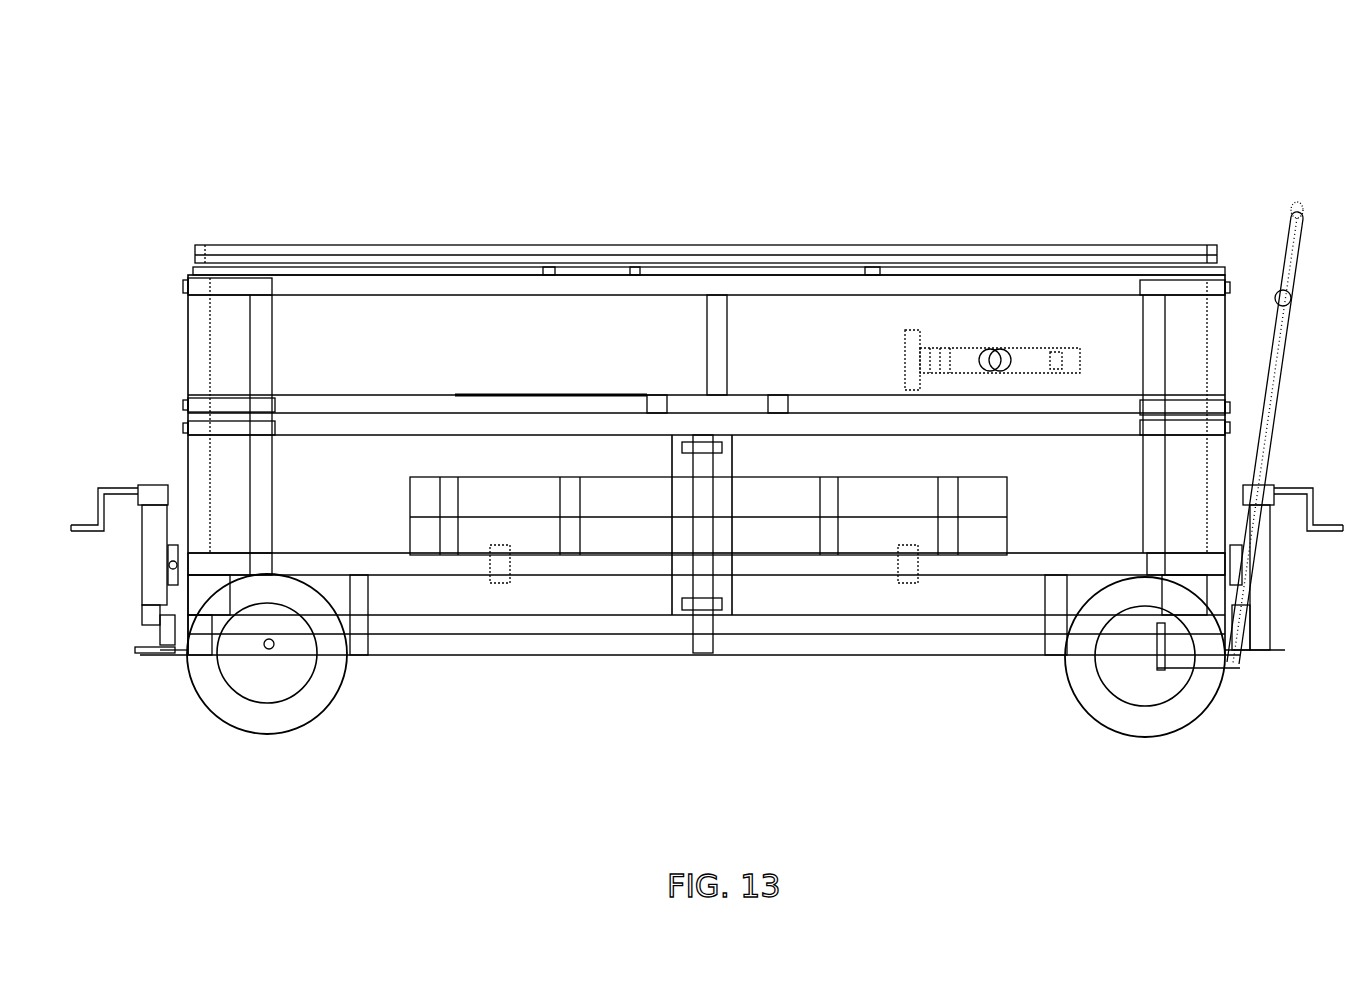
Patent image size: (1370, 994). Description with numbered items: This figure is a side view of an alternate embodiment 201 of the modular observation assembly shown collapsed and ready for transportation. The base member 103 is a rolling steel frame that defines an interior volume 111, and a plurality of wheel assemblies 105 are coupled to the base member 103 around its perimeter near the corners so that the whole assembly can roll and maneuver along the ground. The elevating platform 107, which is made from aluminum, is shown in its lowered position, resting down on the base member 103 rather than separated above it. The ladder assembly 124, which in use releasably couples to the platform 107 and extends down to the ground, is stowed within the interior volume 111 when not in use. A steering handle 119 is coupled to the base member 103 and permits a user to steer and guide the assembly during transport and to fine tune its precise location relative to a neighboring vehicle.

The alternate embodiment of assembly 201 is at (720, 421).
The elevating platform 107 is at (170, 350).
The base member 103 is at (645, 655).
The wheel assemblies 105 is at (1206, 735).
The ladder assembly 124 is at (1005, 483).
The interior volume 111 is at (1036, 536).
The steering handle 119 is at (1297, 258).